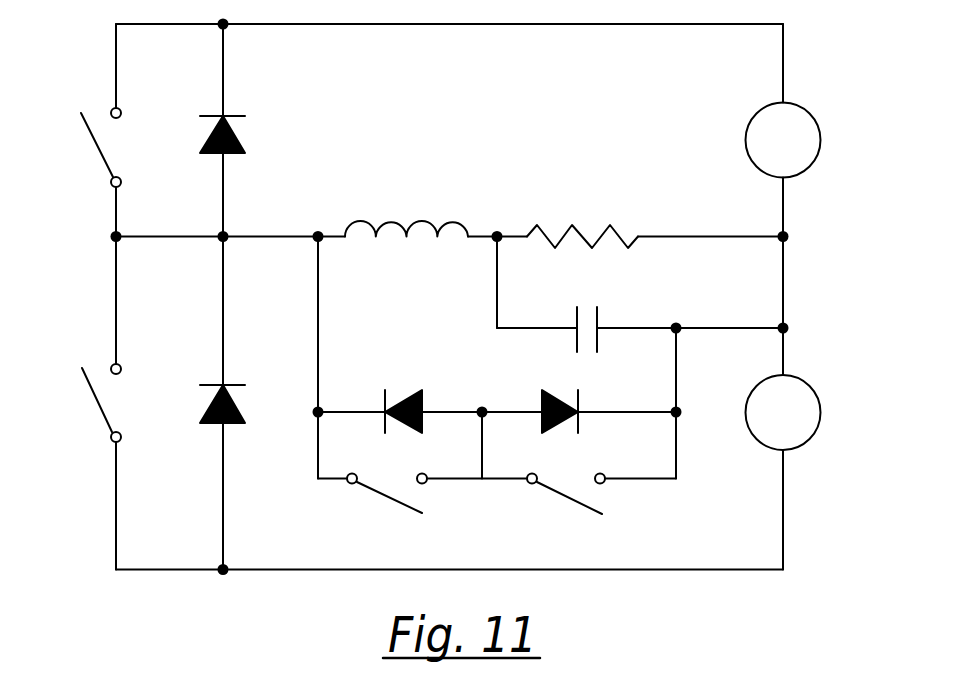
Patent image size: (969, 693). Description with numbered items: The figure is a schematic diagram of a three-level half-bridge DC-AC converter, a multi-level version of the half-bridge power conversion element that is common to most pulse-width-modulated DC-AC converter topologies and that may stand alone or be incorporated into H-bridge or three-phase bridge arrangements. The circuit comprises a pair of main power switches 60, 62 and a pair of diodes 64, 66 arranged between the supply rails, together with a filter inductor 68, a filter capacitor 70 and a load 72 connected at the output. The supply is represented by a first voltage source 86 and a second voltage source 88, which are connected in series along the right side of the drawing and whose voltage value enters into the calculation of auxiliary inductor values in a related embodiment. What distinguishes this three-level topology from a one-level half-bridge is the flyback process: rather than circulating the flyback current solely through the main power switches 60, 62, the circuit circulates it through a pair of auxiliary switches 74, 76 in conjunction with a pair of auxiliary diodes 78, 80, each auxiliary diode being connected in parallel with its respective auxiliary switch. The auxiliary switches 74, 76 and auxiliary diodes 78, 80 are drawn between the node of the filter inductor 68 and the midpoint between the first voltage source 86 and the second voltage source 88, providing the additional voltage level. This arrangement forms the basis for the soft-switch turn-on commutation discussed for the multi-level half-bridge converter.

The main power switch 60 is at (92, 138).
The main power switch 62 is at (93, 397).
The diode 64 is at (237, 115).
The diode 66 is at (237, 384).
The filter inductor 68 is at (425, 218).
The filter capacitor 70 is at (597, 315).
The load 72 is at (575, 225).
The auxiliary switch 74 is at (392, 500).
The auxiliary switch 76 is at (573, 502).
The auxiliary diode 78 is at (385, 396).
The auxiliary diode 80 is at (578, 398).
The voltage source V1 86 is at (820, 135).
The voltage source V2 88 is at (820, 393).